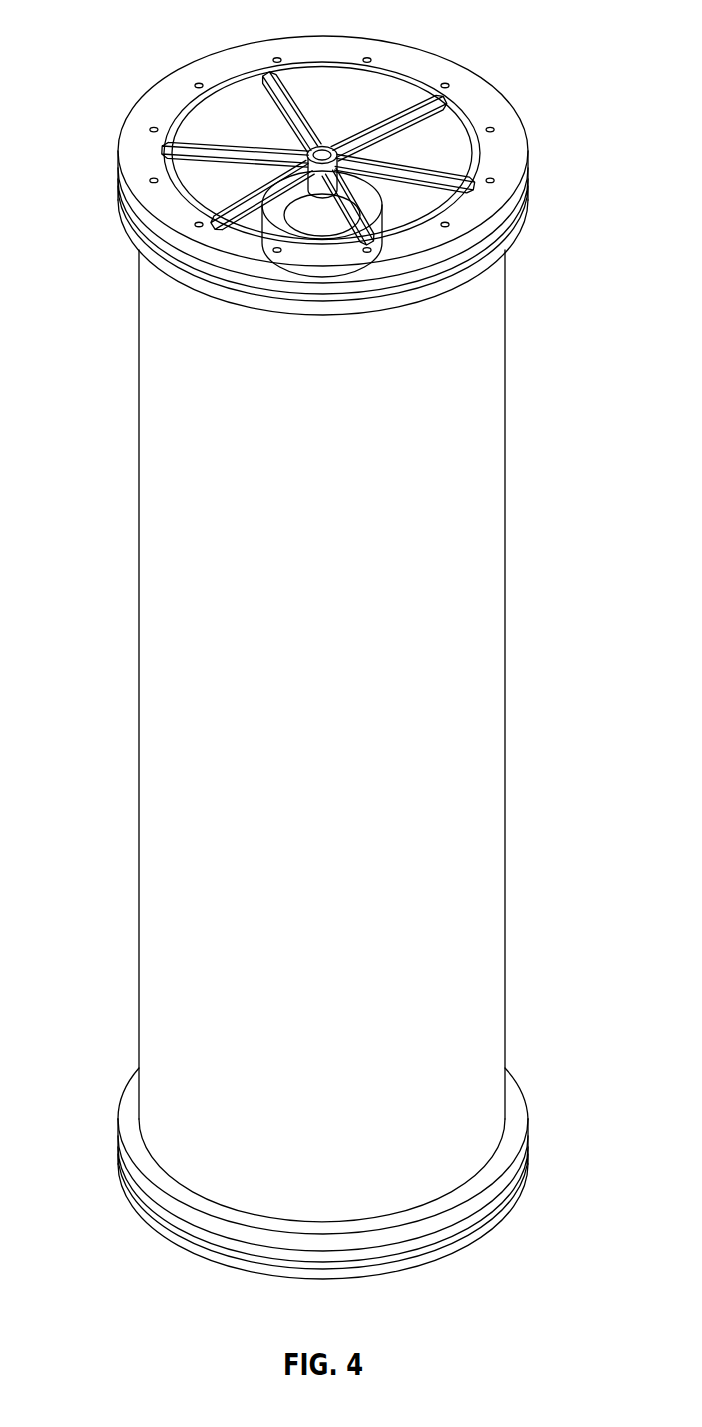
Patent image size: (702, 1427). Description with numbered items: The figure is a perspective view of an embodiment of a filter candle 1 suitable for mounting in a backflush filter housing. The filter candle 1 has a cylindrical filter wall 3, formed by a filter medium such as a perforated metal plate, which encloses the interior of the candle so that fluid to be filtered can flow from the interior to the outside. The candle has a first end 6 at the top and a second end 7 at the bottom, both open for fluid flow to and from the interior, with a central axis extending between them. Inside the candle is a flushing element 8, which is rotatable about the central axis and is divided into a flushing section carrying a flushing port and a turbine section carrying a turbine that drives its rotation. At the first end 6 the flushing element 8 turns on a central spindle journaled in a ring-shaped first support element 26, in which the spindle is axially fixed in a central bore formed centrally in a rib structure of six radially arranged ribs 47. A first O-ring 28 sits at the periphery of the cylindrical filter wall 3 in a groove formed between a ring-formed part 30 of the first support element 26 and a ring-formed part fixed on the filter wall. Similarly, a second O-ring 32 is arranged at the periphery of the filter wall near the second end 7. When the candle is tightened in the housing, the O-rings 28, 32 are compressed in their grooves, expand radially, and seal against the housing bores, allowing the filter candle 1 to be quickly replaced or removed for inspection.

The filter candle 1 is at (310, 640).
The cylindrical filter wall 3 is at (152, 442).
The first end 6 is at (325, 191).
The second end 7 is at (286, 1173).
The flushing element 8 is at (334, 238).
The first support element 26 is at (352, 127).
The first O-ring 28 is at (484, 240).
The ring-formed part 30 is at (527, 172).
The second O-ring 32 is at (463, 1232).
The radially arranged ribs 47 is at (398, 112).